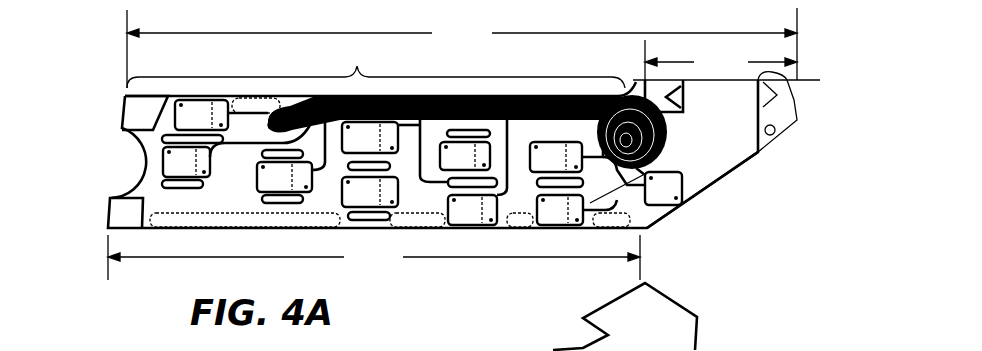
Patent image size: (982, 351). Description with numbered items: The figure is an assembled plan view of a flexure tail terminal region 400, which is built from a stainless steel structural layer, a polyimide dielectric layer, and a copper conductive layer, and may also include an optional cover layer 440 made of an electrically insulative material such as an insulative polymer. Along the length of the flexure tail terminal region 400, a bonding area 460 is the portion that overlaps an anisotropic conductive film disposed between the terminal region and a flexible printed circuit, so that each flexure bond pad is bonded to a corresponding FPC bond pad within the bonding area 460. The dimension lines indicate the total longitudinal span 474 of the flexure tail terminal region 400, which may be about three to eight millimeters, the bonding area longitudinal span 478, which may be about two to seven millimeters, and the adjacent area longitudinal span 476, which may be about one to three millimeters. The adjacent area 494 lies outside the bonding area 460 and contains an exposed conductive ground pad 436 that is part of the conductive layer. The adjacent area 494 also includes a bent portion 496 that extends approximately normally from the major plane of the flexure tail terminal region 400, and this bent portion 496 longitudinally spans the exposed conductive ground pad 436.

The flexure tail terminal region 400 is at (117, 70).
The bonding area 460 is at (376, 62).
The total longitudinal span 474 is at (462, 48).
The adjacent area longitudinal span 476 is at (721, 60).
The bonding area longitudinal span 478 is at (374, 257).
The bent portion 496 is at (797, 120).
The adjacent area 494 is at (708, 150).
The exposed conductive ground pad 436 is at (670, 190).
The cover layer 440 is at (697, 340).